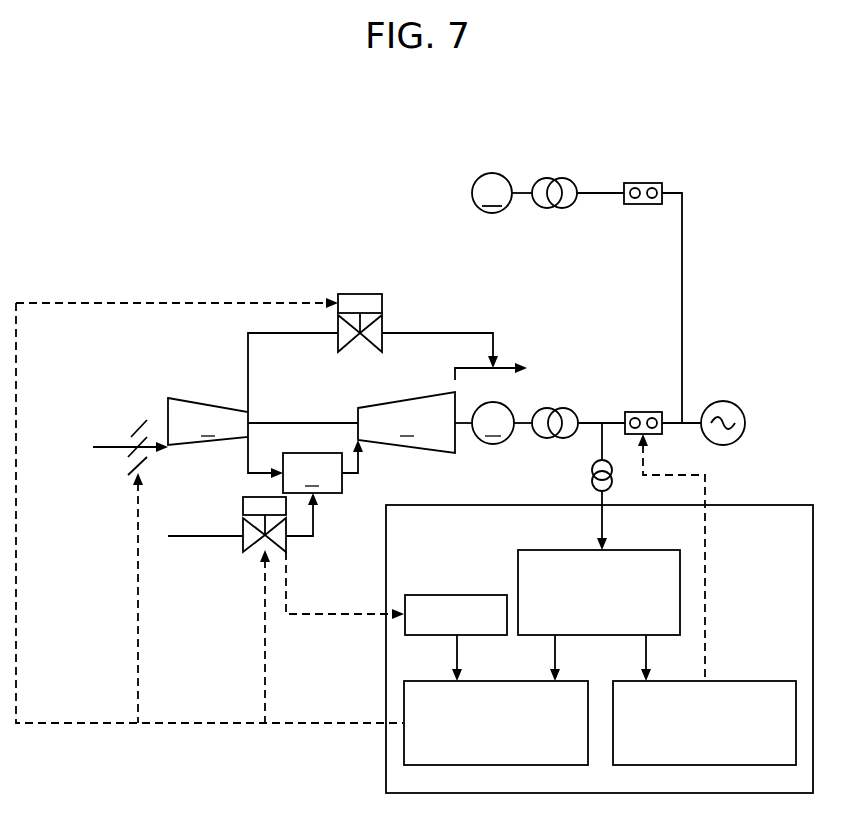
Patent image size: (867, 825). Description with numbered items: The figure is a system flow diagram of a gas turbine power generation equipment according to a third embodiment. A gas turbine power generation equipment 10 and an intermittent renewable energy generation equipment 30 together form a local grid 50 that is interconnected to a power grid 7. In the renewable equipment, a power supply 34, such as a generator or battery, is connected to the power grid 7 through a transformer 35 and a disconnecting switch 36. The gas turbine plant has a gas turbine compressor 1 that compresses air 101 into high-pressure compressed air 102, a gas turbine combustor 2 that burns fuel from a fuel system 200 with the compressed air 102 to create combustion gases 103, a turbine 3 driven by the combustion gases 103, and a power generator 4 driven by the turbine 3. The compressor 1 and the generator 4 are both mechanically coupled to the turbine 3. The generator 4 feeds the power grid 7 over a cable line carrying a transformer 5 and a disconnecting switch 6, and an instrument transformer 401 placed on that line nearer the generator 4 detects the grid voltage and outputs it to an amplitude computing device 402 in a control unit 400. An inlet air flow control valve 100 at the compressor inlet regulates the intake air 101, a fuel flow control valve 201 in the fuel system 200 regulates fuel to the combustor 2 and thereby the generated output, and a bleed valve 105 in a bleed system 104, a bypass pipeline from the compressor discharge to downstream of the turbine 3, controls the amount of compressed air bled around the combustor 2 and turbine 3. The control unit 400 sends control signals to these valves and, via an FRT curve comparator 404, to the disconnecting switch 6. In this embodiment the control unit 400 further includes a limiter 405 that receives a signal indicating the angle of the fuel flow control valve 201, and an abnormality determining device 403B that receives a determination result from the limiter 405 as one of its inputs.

The gas turbine compressor 1 is at (208, 421).
The gas turbine combustor 2 is at (312, 473).
The turbine 3 is at (406, 422).
The power generator 4 is at (493, 423).
The transformer 5 is at (573, 408).
The disconnecting switch 6 is at (646, 410).
The power grid 7 is at (740, 410).
The gas turbine power generation equipment 10 is at (355, 240).
The intermittent renewable energy generation equipment 30 is at (470, 155).
The power supply 34 is at (492, 193).
The transformer 35 is at (566, 178).
The disconnecting switch 36 is at (646, 182).
The local grid 50 is at (448, 100).
The inlet air flow control valve 100 is at (140, 418).
The air 101 is at (105, 452).
The compressed air 102 is at (248, 462).
The combustion gases 103 is at (357, 473).
The bleed system 104 is at (287, 336).
The bleed valve 105 is at (366, 294).
The fuel system 200 is at (196, 540).
The fuel flow control valve 201 is at (243, 555).
The control unit 400 is at (437, 549).
The instrument transformer 401 is at (590, 473).
The amplitude computing device 402 is at (624, 551).
The abnormality determining device 403B is at (512, 666).
The FRT curve comparator 404 is at (770, 667).
The limiter 405 is at (477, 582).